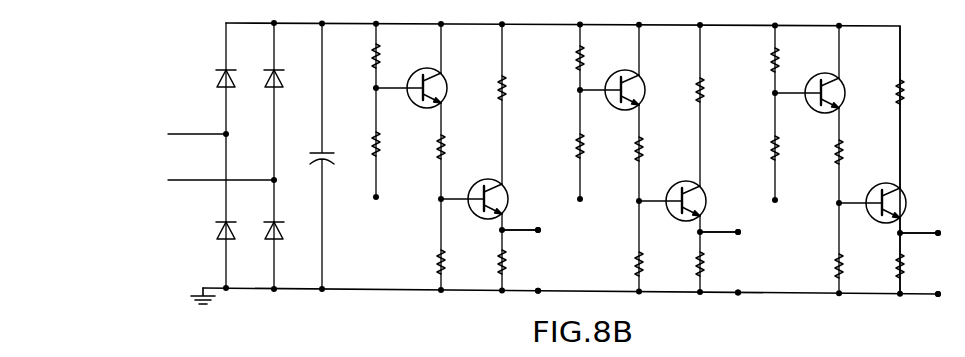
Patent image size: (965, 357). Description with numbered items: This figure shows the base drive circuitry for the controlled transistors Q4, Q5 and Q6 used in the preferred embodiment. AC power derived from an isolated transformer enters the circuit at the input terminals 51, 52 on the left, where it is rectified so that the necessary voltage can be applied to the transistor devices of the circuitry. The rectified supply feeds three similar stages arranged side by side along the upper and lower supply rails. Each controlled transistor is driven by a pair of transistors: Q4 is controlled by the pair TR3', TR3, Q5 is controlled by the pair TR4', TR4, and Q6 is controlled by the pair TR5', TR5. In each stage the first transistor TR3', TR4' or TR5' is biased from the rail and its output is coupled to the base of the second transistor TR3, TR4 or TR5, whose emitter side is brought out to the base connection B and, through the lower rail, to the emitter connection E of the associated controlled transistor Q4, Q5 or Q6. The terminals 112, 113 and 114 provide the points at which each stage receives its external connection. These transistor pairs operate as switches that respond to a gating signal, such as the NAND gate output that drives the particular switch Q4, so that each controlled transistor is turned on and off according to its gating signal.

The AC input terminal 51 is at (188, 132).
The AC input terminal 52 is at (189, 181).
The output terminal 112 is at (377, 197).
The output terminal 113 is at (581, 199).
The output terminal 114 is at (776, 200).
The transistor TR3' is at (419, 72).
The transistor TR3 is at (477, 184).
The transistor TR4' is at (617, 74).
The transistor TR4 is at (675, 186).
The transistor TR5' is at (816, 77).
The transistor TR5 is at (876, 188).
The controlled transistor Q4 is at (526, 260).
The controlled transistor Q5 is at (725, 262).
The controlled transistor Q6 is at (925, 263).
The base terminal B is at (722, 222).
The emitter terminal E is at (737, 302).